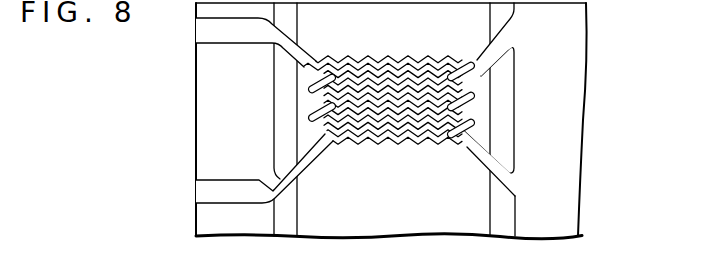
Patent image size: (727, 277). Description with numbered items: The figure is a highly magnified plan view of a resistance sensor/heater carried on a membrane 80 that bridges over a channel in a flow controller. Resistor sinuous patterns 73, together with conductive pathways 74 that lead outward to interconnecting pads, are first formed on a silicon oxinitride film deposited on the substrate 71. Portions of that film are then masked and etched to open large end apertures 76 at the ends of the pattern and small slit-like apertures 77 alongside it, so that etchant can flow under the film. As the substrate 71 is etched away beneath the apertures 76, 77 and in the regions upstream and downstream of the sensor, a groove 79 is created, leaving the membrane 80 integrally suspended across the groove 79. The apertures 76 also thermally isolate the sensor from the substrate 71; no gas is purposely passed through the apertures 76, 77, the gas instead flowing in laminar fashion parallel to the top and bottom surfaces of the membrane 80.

The substrate 71 is at (519, 60).
The resistor sinuous patterns 73 is at (422, 56).
The conductive pathways 74 is at (261, 46).
The large end apertures 76 is at (298, 143).
The small slit-like apertures 77 is at (359, 141).
The groove 79 is at (410, 218).
The membrane 80 is at (481, 161).